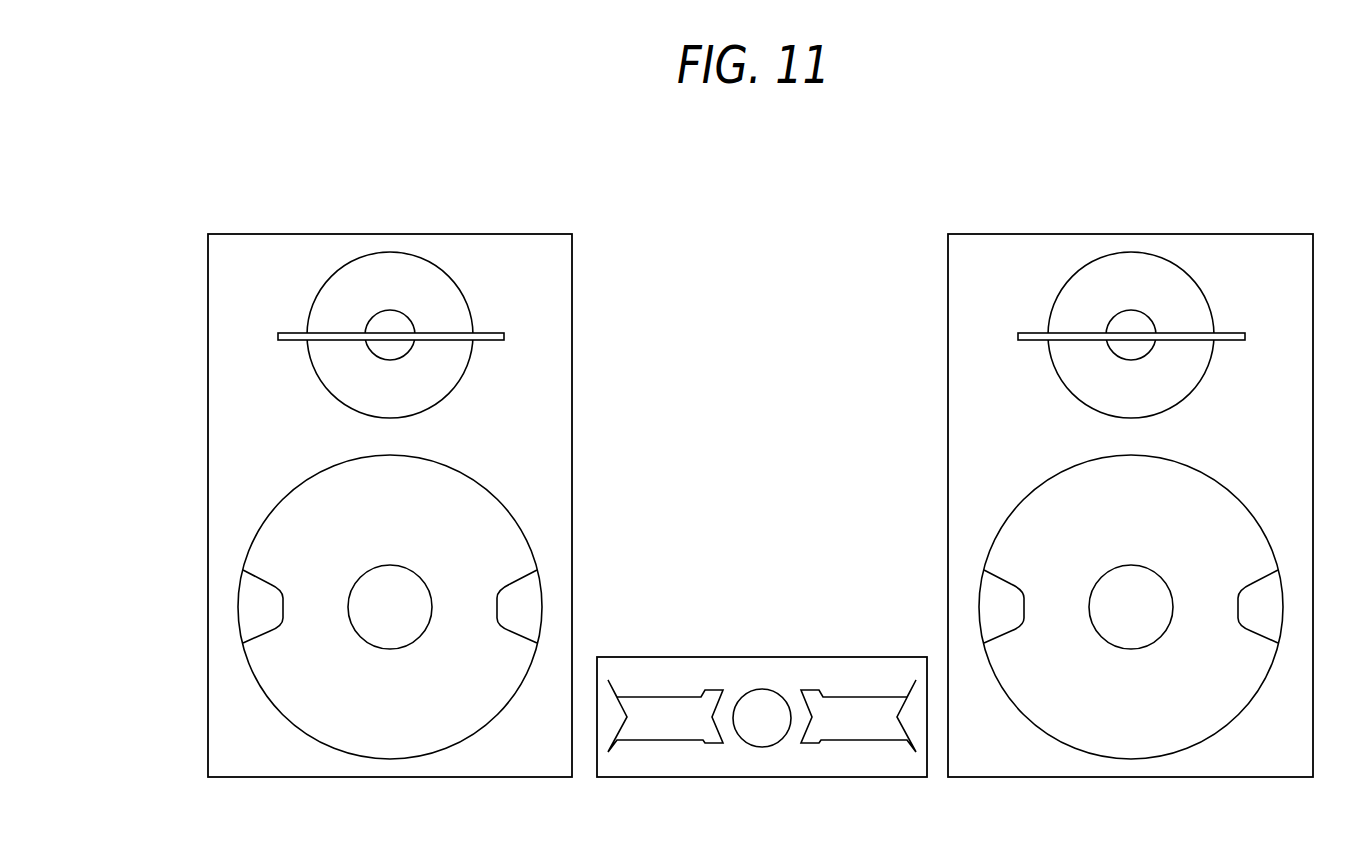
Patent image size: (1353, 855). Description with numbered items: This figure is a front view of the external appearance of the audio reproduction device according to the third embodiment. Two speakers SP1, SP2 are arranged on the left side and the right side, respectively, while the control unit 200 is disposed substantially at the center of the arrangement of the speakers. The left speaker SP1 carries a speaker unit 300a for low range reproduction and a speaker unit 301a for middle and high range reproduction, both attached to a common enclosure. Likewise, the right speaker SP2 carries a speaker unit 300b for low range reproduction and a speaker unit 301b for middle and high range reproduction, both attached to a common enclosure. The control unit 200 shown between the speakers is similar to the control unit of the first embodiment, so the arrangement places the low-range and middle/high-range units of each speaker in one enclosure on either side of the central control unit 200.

The speaker SP1 is at (312, 234).
The speaker SP2 is at (1045, 234).
The speaker unit for middle and high range reproduction 301a is at (470, 305).
The speaker unit for low range reproduction 300a is at (467, 477).
The speaker unit for middle and high range reproduction 301b is at (1055, 305).
The speaker unit for low range reproduction 300b is at (1055, 475).
The control unit 200 is at (700, 657).